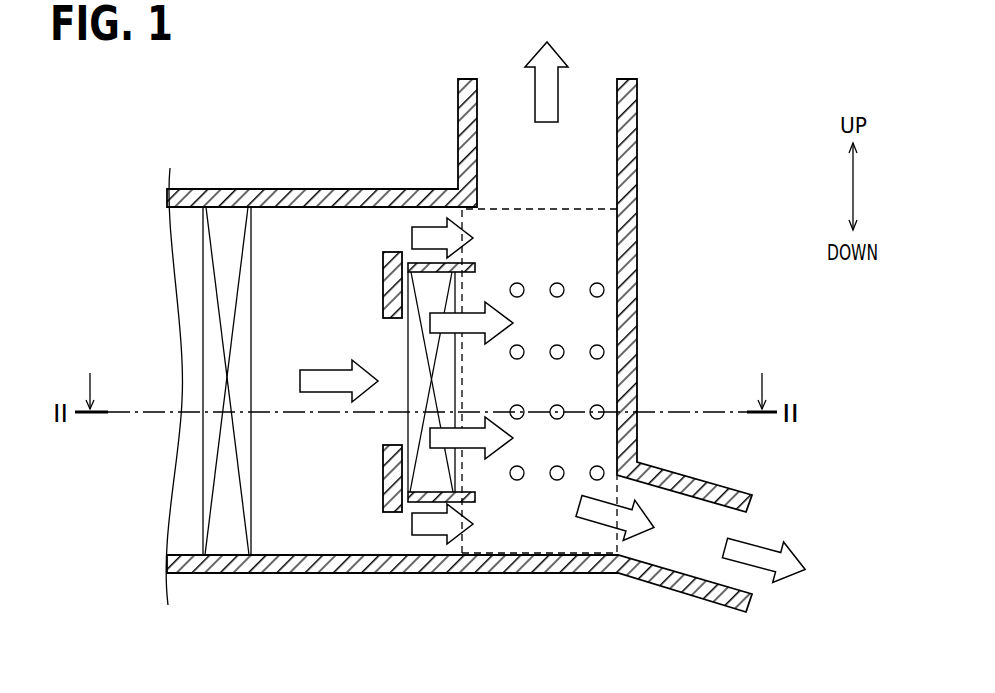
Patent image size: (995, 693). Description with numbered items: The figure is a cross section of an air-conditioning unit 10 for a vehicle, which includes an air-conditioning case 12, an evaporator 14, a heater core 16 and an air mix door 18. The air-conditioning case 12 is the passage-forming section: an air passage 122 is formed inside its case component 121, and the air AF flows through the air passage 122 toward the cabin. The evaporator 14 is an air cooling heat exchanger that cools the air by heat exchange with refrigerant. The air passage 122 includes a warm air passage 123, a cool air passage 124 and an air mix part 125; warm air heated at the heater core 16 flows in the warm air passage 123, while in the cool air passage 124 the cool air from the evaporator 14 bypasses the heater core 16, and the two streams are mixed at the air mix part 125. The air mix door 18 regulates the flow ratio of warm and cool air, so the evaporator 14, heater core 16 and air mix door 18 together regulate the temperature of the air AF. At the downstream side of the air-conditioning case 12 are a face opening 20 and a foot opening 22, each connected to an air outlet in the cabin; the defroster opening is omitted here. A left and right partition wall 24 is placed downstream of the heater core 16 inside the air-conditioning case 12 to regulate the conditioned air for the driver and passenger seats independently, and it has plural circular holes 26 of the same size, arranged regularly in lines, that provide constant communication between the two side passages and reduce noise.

The air-conditioning unit 10 is at (171, 131).
The air-conditioning case 12 is at (214, 189).
The evaporator 14 is at (203, 486).
The heater core 16 is at (407, 423).
The air mix door 18 is at (383, 282).
The face opening 20 is at (587, 96).
The foot opening 22 is at (738, 578).
The left and right partition wall 24 is at (565, 209).
The holes 26 is at (597, 288).
The case component 121 is at (281, 189).
The air passage 122 is at (288, 282).
The warm air passage 123 is at (468, 392).
The cool air passage 124 is at (421, 209).
The air mix part 125 is at (575, 442).
The air AF is at (310, 393).